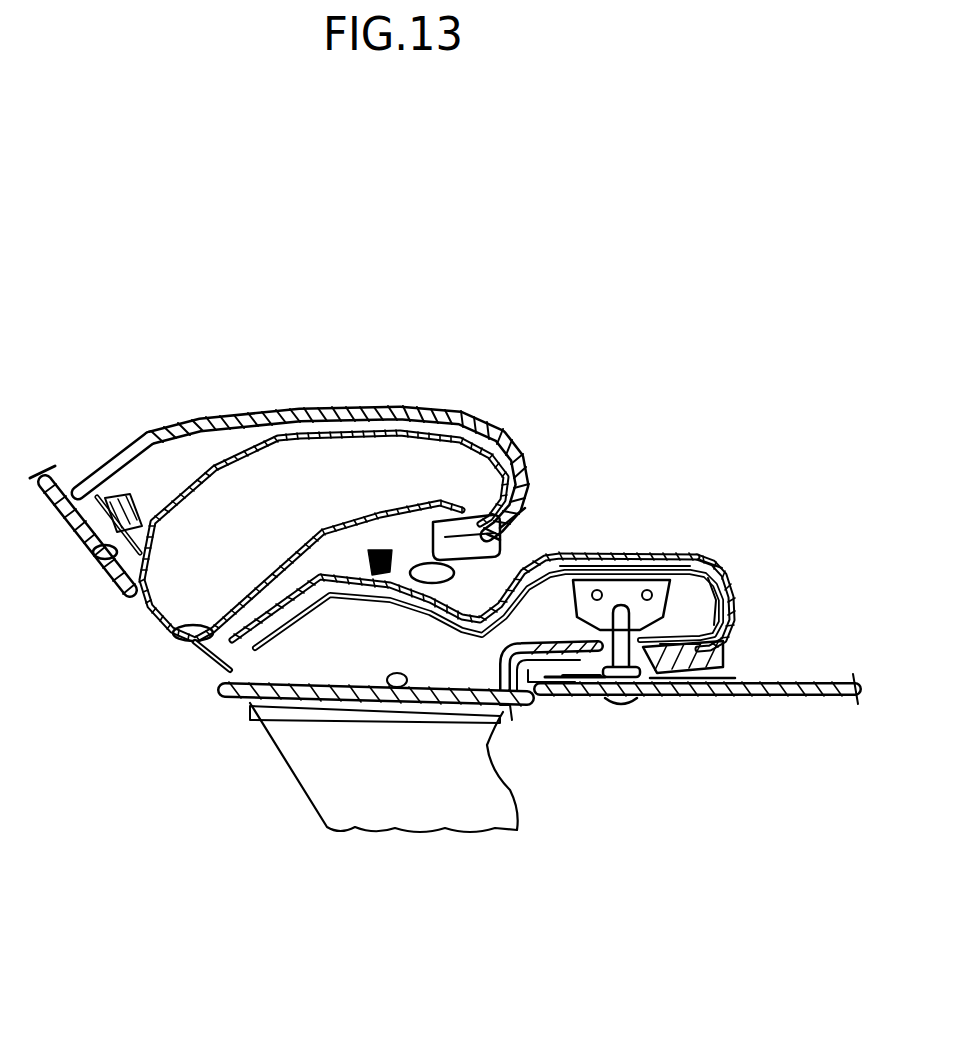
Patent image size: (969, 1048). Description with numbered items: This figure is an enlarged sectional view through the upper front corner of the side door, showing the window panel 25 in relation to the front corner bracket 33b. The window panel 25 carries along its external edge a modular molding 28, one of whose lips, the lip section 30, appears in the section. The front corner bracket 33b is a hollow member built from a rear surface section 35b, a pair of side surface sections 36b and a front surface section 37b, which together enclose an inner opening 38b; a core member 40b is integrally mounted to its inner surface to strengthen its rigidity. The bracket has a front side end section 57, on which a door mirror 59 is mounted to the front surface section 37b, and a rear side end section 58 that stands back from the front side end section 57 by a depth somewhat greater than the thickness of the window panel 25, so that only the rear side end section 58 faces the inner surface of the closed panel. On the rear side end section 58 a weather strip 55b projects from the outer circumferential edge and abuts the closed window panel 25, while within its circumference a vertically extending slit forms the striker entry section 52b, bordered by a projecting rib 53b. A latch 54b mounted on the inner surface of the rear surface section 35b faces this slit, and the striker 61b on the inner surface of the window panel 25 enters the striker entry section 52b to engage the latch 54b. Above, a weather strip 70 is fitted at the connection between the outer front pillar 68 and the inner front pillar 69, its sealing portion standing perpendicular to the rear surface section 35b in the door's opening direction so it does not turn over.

The window panel 25 is at (803, 697).
The modular molding 28 is at (531, 717).
The lip section 30 is at (503, 735).
The front corner bracket 33b is at (712, 545).
The rear surface section 35b is at (658, 554).
The side surface sections 36b is at (176, 636).
The front surface section 37b is at (307, 697).
The inner opening 38b is at (287, 662).
The core member 40b is at (405, 690).
The striker entry section 52b is at (614, 650).
The rib 53b is at (586, 668).
The latch 54b is at (690, 590).
The weather strip 55b is at (590, 680).
The front side end section 57 is at (430, 715).
The rear side end section 58 is at (692, 652).
The door mirror 59 is at (360, 795).
The striker 61b is at (620, 578).
The outer front pillar 68 is at (275, 565).
The inner front pillar 69 is at (352, 440).
The weather strip 70 is at (523, 528).